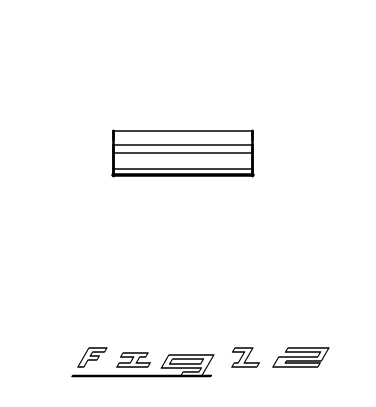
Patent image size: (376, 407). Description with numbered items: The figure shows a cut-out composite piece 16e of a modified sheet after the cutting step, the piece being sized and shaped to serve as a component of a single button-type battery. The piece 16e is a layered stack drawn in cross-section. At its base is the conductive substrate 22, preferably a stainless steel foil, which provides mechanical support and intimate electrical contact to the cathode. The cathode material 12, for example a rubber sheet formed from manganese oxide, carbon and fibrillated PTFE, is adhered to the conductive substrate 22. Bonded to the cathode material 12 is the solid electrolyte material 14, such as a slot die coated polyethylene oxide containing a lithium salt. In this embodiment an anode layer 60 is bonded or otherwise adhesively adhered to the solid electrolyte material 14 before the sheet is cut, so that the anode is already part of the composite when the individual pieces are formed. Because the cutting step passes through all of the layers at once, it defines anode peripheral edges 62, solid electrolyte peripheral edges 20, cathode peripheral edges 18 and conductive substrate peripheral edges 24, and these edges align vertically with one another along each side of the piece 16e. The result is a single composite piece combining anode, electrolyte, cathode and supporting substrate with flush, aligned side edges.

The composite piece 16e is at (130, 103).
The anode layer 60 is at (155, 136).
The solid electrolyte material 14 is at (188, 150).
The cathode material 12 is at (200, 163).
The conductive substrate 22 is at (225, 175).
The anode peripheral edges 62 is at (113, 131).
The solid electrolyte peripheral edges 20 is at (113, 150).
The cathode peripheral edges 18 is at (113, 162).
The conductive substrate peripheral edges 24 is at (113, 170).